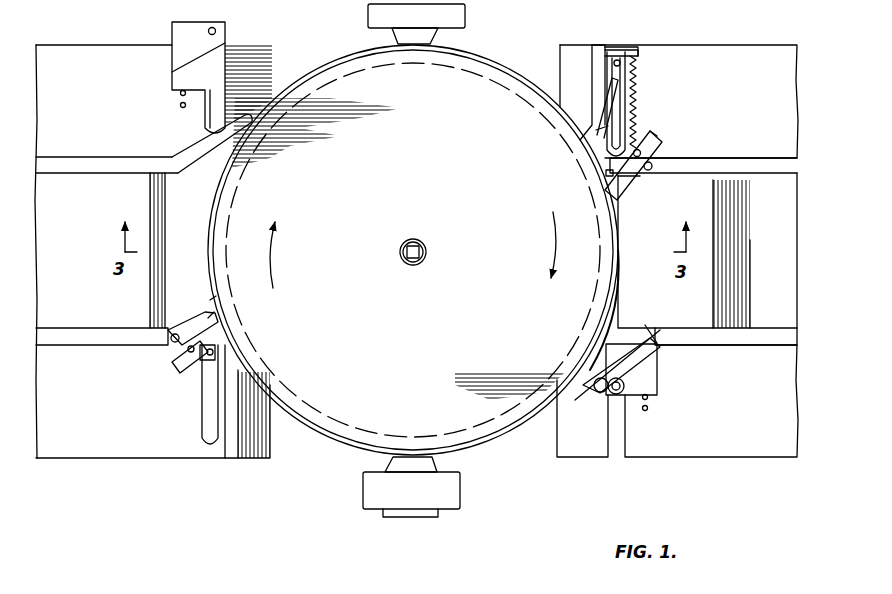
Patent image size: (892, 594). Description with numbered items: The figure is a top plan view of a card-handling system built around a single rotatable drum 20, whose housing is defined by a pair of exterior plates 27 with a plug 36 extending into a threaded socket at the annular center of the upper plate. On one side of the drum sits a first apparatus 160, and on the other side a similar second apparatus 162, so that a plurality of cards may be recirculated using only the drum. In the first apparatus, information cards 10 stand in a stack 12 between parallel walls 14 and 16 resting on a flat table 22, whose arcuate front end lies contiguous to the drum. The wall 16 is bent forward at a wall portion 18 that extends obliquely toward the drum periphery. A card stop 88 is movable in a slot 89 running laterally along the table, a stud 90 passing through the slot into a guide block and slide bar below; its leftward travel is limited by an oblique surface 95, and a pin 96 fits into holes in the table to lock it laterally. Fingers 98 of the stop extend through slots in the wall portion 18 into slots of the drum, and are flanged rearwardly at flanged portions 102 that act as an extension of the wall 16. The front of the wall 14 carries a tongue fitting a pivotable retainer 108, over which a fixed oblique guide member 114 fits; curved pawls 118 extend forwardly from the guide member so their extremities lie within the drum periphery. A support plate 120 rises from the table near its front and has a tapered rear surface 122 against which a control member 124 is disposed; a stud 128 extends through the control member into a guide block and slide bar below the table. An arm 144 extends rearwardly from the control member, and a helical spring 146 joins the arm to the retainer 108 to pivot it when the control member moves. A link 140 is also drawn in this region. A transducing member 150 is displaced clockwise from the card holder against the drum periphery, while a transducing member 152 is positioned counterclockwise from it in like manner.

The second apparatus 162 is at (84, 44).
The drum 20 is at (336, 447).
The exterior plates 27 is at (413, 250).
The plug 36 is at (413, 243).
The transducing member 152 is at (460, 14).
The transducing member 150 is at (450, 490).
The first apparatus 160 is at (760, 44).
The support plate 120 is at (586, 74).
The control member 124 is at (632, 46).
The arm 144 is at (640, 53).
The stud 128 is at (616, 57).
The helical spring 146 is at (637, 100).
The rear surface 122 is at (606, 112).
The link 140 is at (598, 137).
The pawls 118 is at (600, 174).
The guide member 114 is at (664, 145).
The stack 12 is at (746, 188).
The wall 14 is at (775, 165).
The card 10 is at (714, 195).
The retainer 108 is at (641, 180).
The fingers 98 is at (620, 292).
The wall 16 is at (760, 335).
The wall portion 18 is at (628, 346).
The flanged portions 102 is at (650, 323).
The card stop 88 is at (663, 366).
The stud 90 is at (620, 386).
The surface 95 is at (599, 388).
The pin 96 is at (650, 400).
The slot 89 is at (622, 455).
The table 22 is at (752, 455).